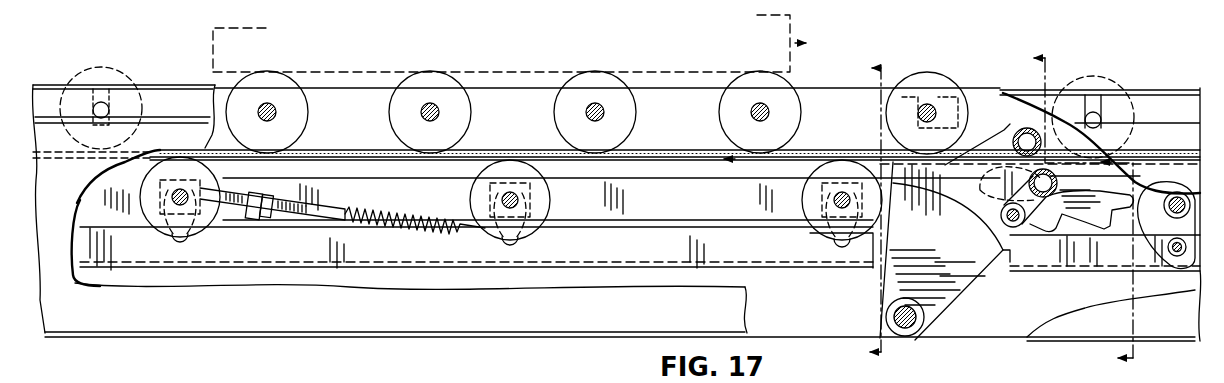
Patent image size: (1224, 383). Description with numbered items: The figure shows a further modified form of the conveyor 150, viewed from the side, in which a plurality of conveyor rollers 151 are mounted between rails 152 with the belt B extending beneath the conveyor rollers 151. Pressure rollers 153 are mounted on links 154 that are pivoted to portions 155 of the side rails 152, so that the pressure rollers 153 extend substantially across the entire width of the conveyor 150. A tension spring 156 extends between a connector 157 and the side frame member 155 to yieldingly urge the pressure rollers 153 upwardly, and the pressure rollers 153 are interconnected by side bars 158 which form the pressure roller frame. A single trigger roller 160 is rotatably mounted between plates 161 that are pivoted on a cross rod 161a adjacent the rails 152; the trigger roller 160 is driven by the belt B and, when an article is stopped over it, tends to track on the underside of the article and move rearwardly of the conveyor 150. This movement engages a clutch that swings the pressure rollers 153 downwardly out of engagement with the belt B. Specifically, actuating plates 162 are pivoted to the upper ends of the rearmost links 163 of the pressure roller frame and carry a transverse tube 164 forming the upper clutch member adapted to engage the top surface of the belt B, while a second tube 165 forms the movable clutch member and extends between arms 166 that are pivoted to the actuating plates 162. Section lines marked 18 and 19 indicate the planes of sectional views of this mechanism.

The conveyor 150 is at (1076, 66).
The conveyor rollers 151 is at (440, 78).
The rails 152 is at (818, 100).
The pressure rollers 153 is at (205, 170).
The links 154 is at (190, 238).
The portions of the side rails 155 is at (122, 254).
The tension spring 156 is at (410, 236).
The connector 157 is at (248, 216).
The side bars 158 is at (400, 193).
The trigger roller 160 is at (935, 80).
The plates 161 is at (966, 290).
The cross rod 161a is at (903, 330).
The actuating plates 162 is at (938, 185).
The rearmost links 163 is at (825, 250).
The transverse tube 164 is at (1020, 135).
The second tube 165 is at (1060, 181).
The arms 166 is at (1026, 227).
The belt B is at (312, 152).
The section line 18- 18 is at (1080, 202).
The section line 19- 19 is at (865, 206).